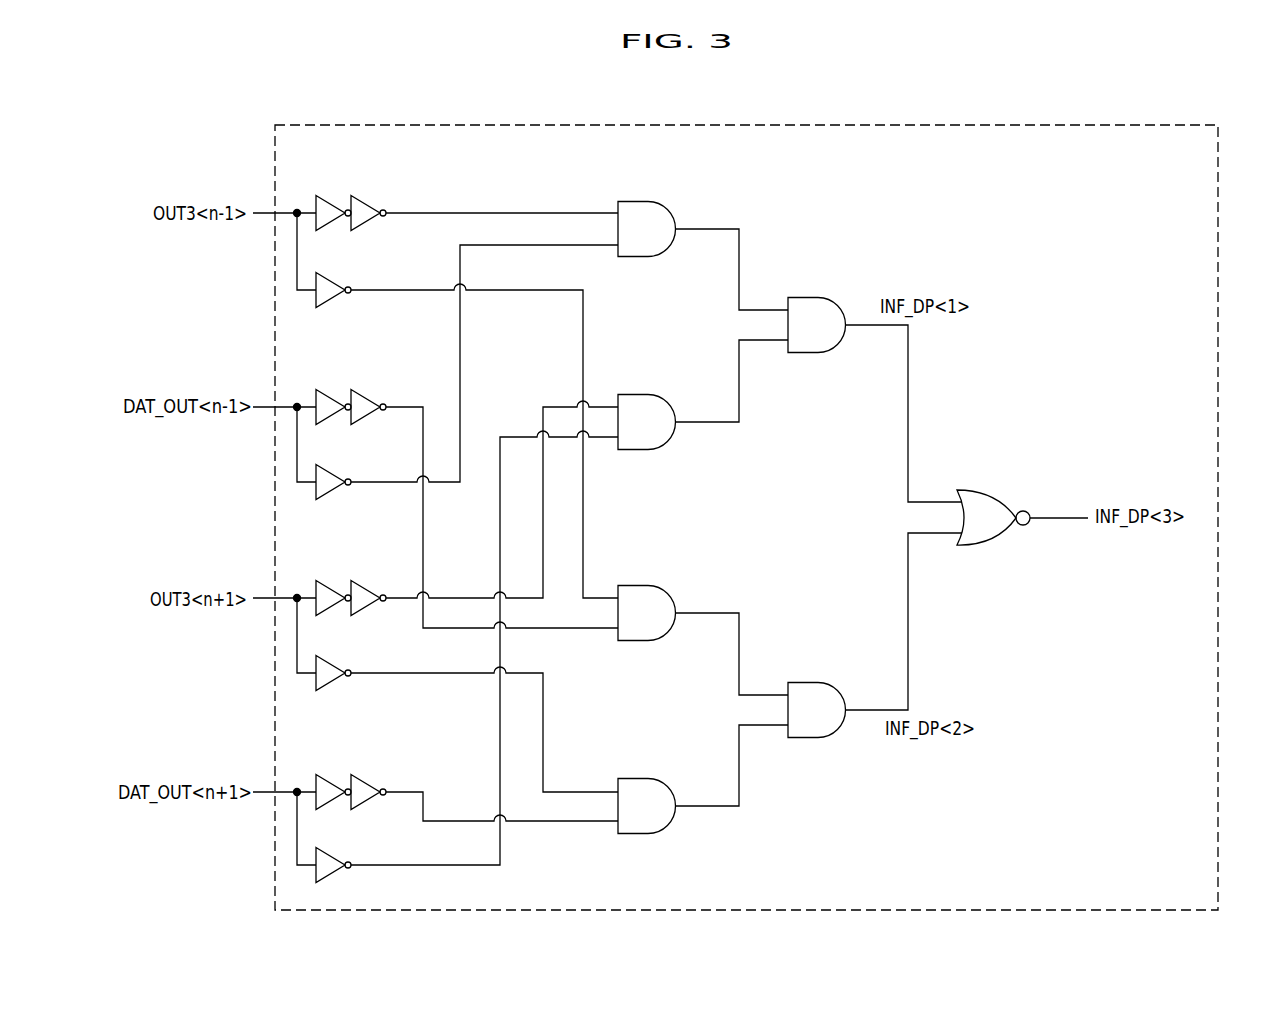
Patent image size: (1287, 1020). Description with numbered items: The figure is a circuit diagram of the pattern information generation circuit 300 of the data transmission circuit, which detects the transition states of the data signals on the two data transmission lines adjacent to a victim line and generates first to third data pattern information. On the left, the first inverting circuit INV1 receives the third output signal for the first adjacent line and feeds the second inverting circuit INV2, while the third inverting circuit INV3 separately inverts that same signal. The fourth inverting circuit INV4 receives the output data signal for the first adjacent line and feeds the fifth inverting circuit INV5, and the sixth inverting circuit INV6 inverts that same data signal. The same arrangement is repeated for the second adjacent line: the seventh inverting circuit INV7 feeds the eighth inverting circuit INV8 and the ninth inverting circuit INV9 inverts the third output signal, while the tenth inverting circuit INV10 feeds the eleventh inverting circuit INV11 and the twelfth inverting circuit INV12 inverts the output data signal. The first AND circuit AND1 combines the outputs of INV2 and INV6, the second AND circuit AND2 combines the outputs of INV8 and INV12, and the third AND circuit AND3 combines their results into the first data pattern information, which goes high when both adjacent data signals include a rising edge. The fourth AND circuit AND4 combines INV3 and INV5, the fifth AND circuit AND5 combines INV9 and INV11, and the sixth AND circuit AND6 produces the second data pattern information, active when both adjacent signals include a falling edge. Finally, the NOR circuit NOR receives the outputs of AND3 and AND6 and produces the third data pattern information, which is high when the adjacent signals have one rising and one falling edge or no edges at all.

The pattern information generation circuit 300 is at (210, 123).
The first inverting circuit INV1 is at (333, 185).
The second inverting circuit INV2 is at (373, 190).
The third inverting circuit INV3 is at (331, 275).
The fourth inverting circuit INV4 is at (333, 379).
The fifth inverting circuit INV5 is at (367, 393).
The sixth inverting circuit INV6 is at (339, 458).
The seventh inverting circuit INV7 is at (333, 570).
The eighth inverting circuit INV8 is at (367, 584).
The ninth inverting circuit INV9 is at (339, 649).
The tenth inverting circuit INV10 is at (333, 762).
The 11th inverting circuit INV11 is at (367, 778).
The 12th inverting circuit INV12 is at (340, 840).
The first AND circuit AND1 is at (661, 189).
The second AND circuit AND2 is at (661, 382).
The third AND circuit AND3 is at (825, 297).
The fourth AND circuit AND4 is at (655, 585).
The fifth AND circuit AND5 is at (655, 778).
The sixth AND circuit AND6 is at (825, 682).
The NOR circuit NOR is at (998, 490).